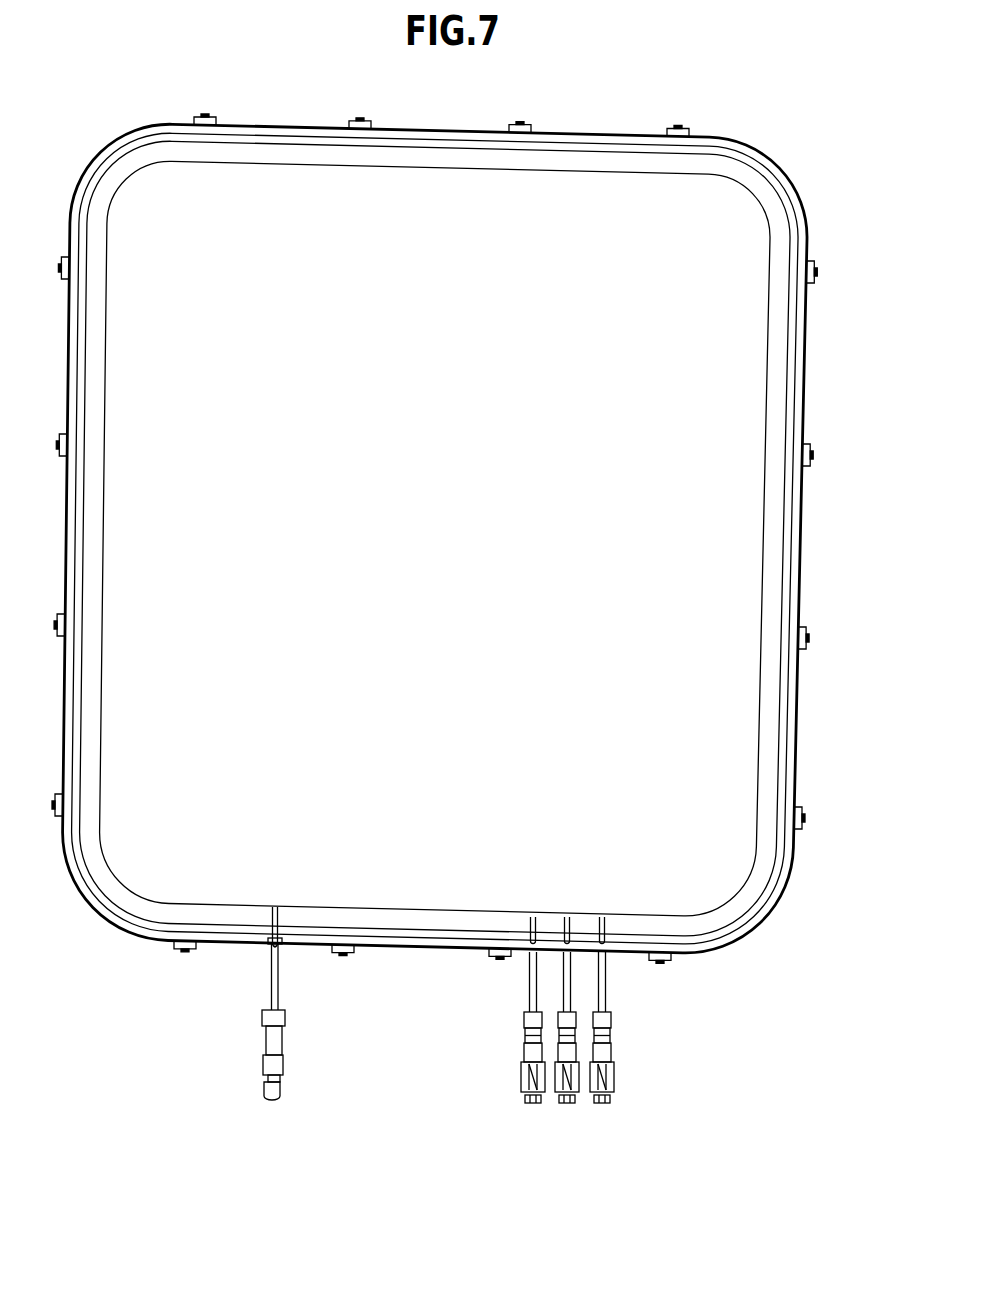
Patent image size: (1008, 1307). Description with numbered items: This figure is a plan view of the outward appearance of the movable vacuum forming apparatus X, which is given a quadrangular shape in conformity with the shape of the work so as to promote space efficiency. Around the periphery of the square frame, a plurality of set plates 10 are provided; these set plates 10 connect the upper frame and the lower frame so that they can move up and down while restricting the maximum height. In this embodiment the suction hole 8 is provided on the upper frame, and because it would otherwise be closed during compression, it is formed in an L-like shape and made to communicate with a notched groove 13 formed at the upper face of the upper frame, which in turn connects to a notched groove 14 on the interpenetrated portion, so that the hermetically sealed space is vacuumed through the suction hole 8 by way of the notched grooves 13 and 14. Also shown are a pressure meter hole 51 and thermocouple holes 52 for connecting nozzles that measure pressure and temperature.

The movable vacuum forming apparatus X is at (553, 137).
The set plate 10 is at (810, 447).
The notched groove 14 is at (273, 908).
The notched groove 13 is at (276, 940).
The suction hole 8 is at (268, 940).
The pressure meter hole 51 is at (532, 1103).
The thermocouple hole 52 is at (600, 1103).